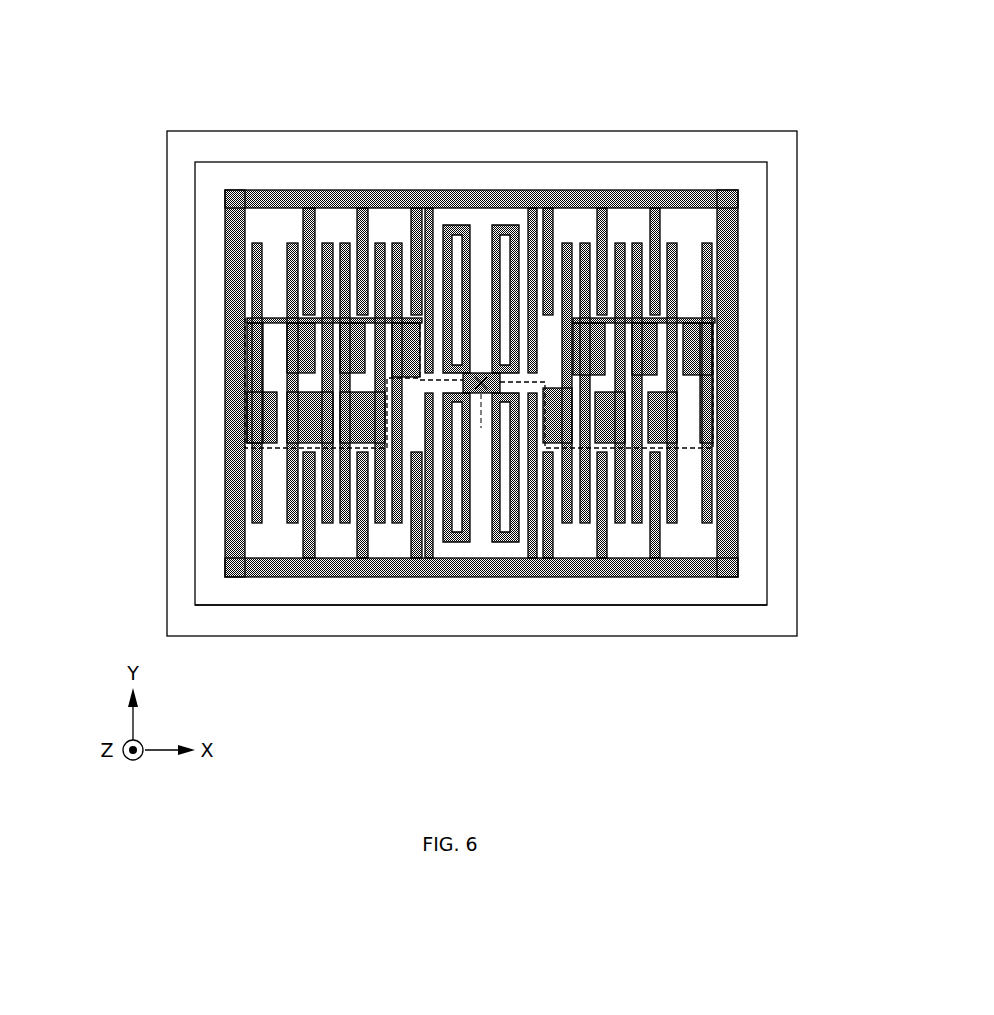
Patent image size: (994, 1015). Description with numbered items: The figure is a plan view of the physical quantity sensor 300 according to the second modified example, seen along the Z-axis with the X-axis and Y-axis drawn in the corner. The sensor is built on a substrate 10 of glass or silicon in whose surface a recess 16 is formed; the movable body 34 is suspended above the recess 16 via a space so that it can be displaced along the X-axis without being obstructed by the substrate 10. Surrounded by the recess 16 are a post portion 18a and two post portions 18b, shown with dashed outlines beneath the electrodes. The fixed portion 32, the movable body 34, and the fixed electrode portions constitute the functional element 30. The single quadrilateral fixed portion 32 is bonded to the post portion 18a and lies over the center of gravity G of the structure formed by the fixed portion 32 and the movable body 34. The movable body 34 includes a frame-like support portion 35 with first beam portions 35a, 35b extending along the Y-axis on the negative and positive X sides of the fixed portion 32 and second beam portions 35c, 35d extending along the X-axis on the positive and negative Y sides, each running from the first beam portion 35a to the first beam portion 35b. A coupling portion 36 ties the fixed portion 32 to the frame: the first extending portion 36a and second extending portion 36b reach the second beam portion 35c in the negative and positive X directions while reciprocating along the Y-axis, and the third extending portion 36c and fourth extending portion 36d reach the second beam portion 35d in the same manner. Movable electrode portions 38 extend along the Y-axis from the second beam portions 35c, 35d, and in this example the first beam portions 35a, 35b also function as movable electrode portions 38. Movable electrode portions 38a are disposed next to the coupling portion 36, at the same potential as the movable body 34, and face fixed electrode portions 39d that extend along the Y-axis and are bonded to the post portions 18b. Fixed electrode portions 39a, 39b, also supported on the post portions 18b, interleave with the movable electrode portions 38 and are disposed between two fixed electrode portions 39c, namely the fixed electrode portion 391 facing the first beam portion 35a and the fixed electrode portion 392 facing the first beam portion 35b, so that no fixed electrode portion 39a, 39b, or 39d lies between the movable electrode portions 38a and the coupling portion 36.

The physical quantity sensor 300 is at (484, 351).
The substrate 10 is at (180, 513).
The recess 16 is at (648, 604).
The post portion 18a is at (715, 380).
The post portion 18b is at (474, 377).
The functional element 30 is at (437, 385).
The fixed portion 32 is at (481, 372).
The movable body 34 is at (231, 183).
The support portion 35 is at (470, 371).
The first beam portion 35a is at (234, 297).
The first beam portion 35b is at (735, 305).
The second beam portion 35c is at (262, 196).
The second beam portion 35d is at (698, 568).
The coupling portion 36 is at (471, 380).
The first extending portion 36a is at (447, 226).
The second extending portion 36b is at (513, 226).
The third extending portion 36c is at (456, 544).
The fourth extending portion 36d is at (510, 544).
The movable electrode portion 38 is at (474, 377).
The movable electrode portion 38a is at (558, 698).
The fixed electrode portion 39a is at (290, 243).
The fixed electrode portion 39b is at (327, 243).
The fixed electrode portion 39c is at (474, 419).
The fixed electrode portion 39d is at (394, 242).
The fixed electrode portion 391 is at (265, 418).
The fixed electrode portion 392 is at (680, 400).
The center of gravity G is at (481, 422).